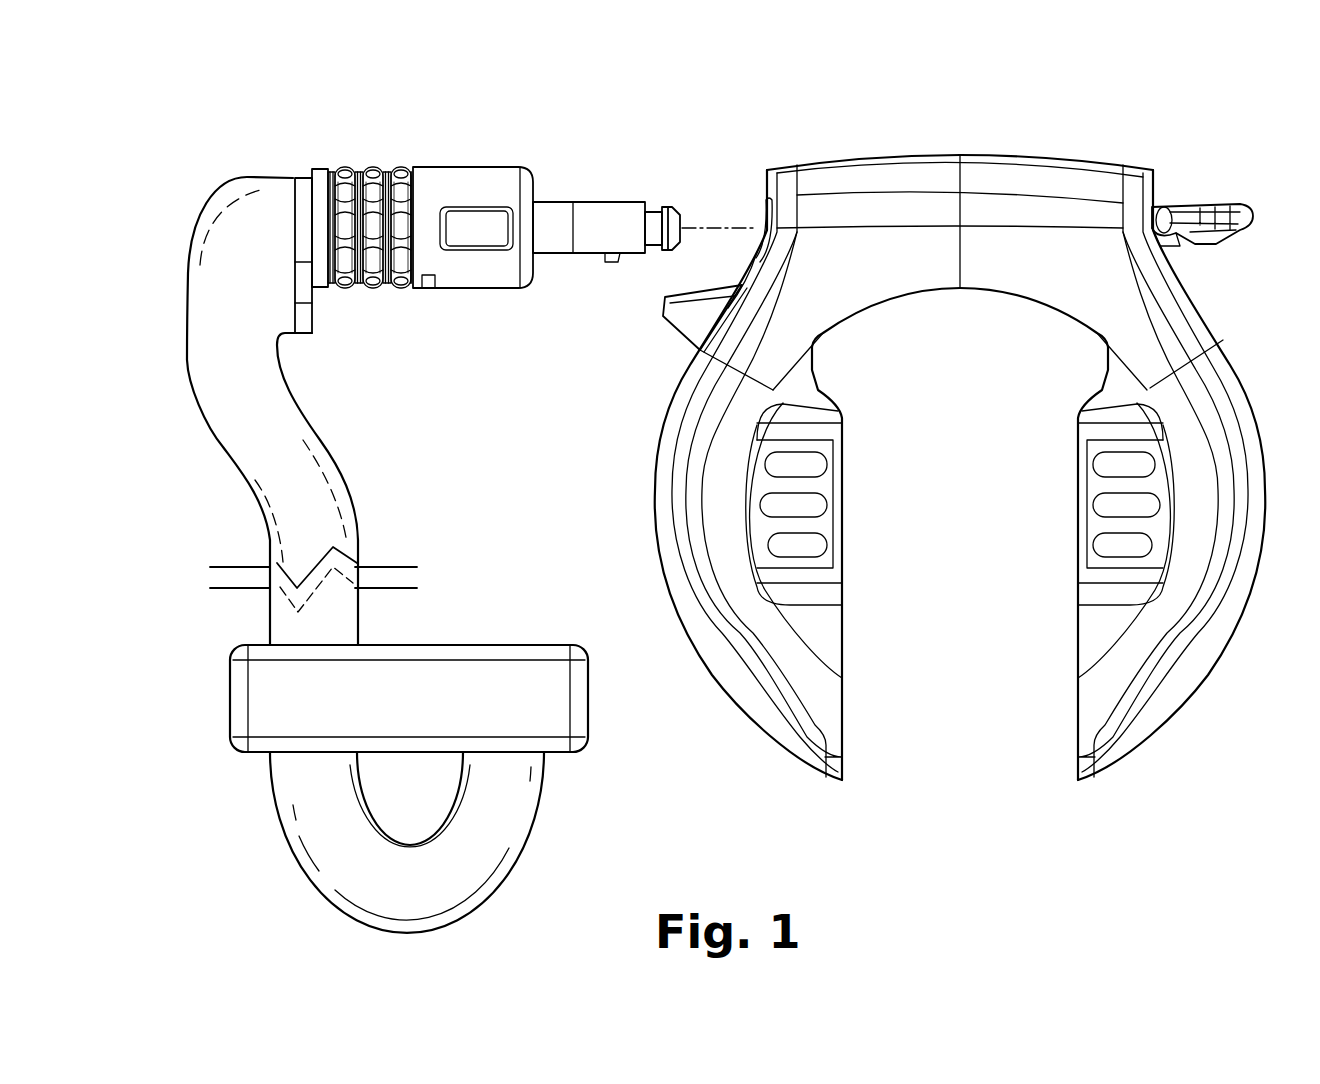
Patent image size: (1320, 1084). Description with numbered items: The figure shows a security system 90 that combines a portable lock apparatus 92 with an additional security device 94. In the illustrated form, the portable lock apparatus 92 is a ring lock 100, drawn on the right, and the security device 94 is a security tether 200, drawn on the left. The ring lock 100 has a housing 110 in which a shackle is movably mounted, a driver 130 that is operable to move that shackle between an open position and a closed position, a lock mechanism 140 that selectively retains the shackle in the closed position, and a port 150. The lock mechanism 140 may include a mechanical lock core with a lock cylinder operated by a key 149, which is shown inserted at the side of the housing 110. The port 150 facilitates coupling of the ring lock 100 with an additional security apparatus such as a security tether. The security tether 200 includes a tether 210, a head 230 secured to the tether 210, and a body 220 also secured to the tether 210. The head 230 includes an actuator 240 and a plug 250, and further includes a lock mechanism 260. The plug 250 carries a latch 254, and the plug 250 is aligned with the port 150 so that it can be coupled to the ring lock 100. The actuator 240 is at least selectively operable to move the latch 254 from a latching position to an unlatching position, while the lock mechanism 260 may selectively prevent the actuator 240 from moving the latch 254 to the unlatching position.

The system 90 is at (196, 104).
The portable lock apparatus 92 is at (761, 108).
The security device 94 is at (643, 109).
The ring lock 100 is at (1081, 118).
The housing 110 is at (755, 270).
The driver 130 is at (650, 362).
The lock mechanism 140 is at (1196, 180).
The key 149 is at (1220, 232).
The port 150 is at (745, 208).
The security tether 200 is at (150, 218).
The tether 210 is at (155, 424).
The body 220 is at (168, 699).
The head 230 is at (340, 142).
The actuator 240 is at (496, 280).
The plug 250 is at (616, 180).
The latch 254 is at (606, 282).
The lock mechanism 260 is at (392, 136).